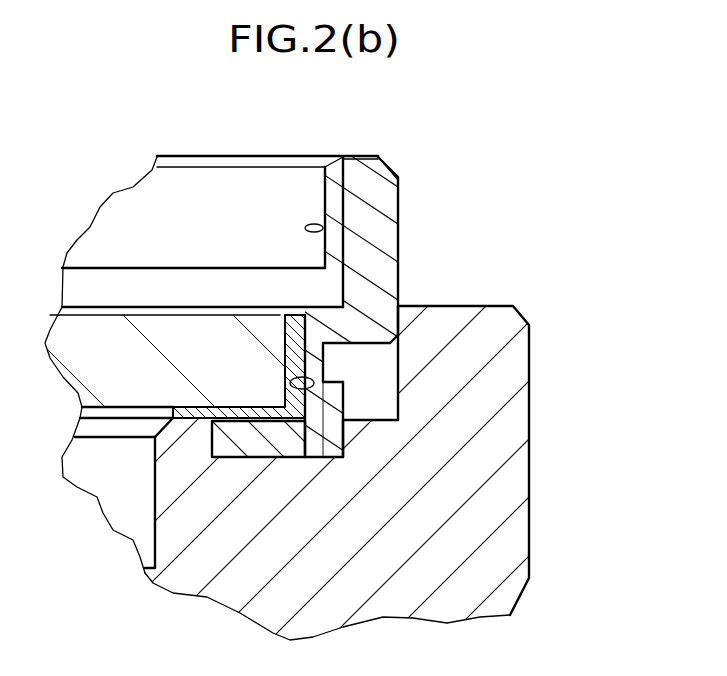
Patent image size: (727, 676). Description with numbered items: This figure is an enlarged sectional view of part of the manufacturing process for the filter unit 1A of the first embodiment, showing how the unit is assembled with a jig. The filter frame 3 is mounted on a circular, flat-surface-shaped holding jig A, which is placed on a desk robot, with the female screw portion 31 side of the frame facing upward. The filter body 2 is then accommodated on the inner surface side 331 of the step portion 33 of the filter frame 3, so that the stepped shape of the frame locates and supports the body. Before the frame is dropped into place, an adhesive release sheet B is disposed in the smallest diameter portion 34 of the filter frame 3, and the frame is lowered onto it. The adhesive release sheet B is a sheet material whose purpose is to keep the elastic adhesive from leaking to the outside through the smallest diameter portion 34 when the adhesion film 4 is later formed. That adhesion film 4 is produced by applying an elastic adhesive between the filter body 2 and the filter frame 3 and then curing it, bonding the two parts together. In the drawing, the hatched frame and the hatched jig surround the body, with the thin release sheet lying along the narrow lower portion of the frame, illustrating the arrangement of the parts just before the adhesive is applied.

The filter unit 1A is at (366, 152).
The filter body 2 is at (92, 368).
The filter frame 3 is at (404, 213).
The female screw portion 31 is at (323, 229).
The step portion 33 is at (334, 326).
The inner surface side 331 is at (315, 386).
The smallest diameter portion 34 is at (257, 440).
The adhesion film 4 is at (293, 352).
The holding jig A is at (540, 338).
The adhesive release sheet B is at (190, 415).